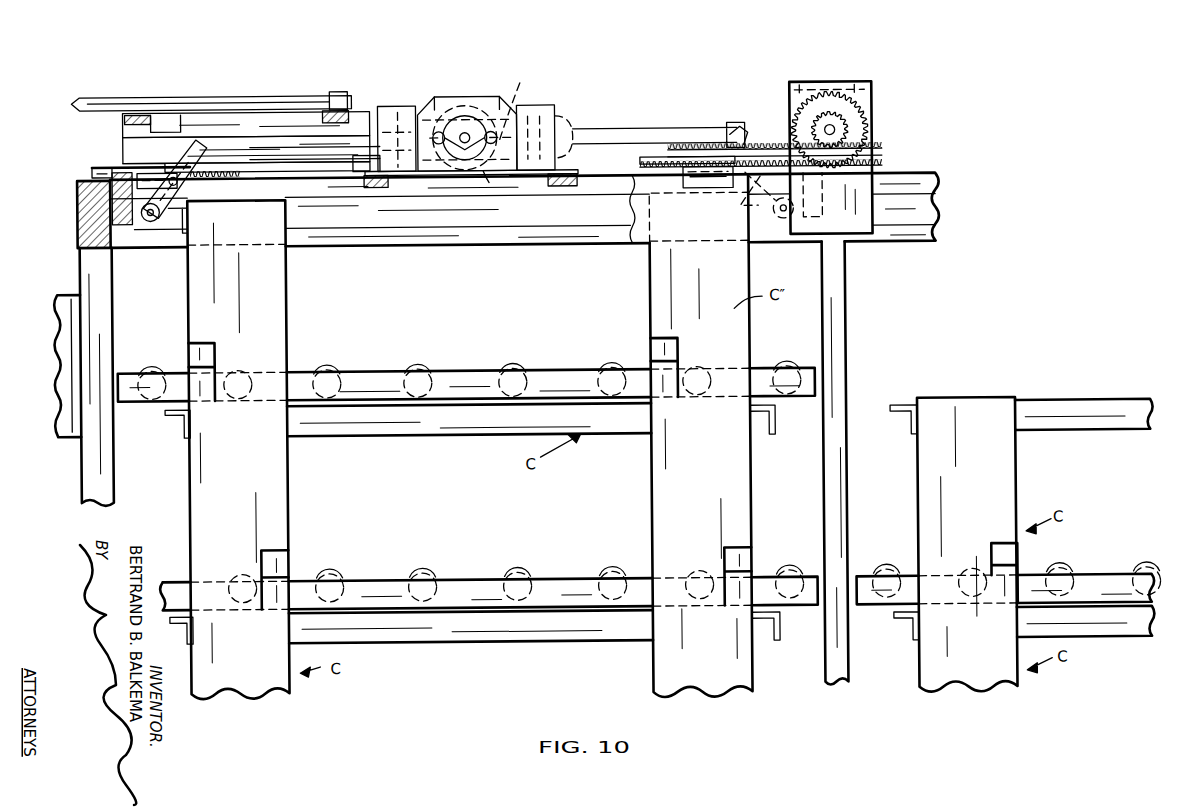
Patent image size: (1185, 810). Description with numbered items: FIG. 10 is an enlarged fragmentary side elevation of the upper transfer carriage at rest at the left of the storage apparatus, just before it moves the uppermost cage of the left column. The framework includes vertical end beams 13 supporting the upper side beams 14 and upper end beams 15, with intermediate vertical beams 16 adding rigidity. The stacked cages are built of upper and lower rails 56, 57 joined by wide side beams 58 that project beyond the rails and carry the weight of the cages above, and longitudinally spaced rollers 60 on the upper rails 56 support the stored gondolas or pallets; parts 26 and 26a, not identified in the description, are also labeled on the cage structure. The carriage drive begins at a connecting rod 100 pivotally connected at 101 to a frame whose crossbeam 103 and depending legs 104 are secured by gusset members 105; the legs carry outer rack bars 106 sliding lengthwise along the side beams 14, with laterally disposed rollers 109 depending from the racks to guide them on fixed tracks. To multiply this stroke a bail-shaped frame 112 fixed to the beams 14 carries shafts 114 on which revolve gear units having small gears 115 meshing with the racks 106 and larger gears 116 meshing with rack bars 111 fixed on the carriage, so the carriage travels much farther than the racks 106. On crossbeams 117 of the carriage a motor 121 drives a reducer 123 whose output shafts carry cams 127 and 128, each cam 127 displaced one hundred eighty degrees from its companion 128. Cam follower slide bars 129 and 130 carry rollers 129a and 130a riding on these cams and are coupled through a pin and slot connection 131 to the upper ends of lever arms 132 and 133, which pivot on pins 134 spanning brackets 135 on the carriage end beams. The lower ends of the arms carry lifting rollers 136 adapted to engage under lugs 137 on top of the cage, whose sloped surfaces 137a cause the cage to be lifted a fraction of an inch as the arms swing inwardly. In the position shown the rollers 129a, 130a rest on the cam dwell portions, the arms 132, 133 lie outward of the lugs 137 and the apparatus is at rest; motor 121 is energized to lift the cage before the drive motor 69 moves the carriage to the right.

The vertical beams 13 is at (104, 333).
The upper side beams 14 is at (909, 229).
The upper end beams 15 is at (62, 209).
The vertical beams 16 is at (850, 352).
The bracket clip 26 is at (199, 377).
The bracket clip 26a is at (288, 548).
The upper rails 56 is at (364, 384).
The lower rails 57 is at (555, 245).
The side beams 58 is at (274, 287).
The rollers 60 is at (422, 365).
The motor 69 is at (62, 337).
The connecting rod 100 is at (277, 94).
The pivotal connection 101 is at (352, 107).
The crossbeam 103 is at (392, 105).
The depending legs 104 is at (187, 117).
The gusset members 105 is at (327, 92).
The outer rack bars 106 is at (700, 168).
The laterally disposed rollers 109 is at (355, 172).
The rack bars 111 is at (670, 158).
The bail-shaped frame 112 is at (864, 197).
The shafts 114 is at (838, 132).
The gears 115 is at (850, 124).
The gears 116 is at (858, 74).
The crossbeams 117 is at (380, 186).
The motor 121 is at (575, 119).
The reducer 123 is at (472, 96).
The cam 127 is at (498, 183).
The cam 128 is at (434, 170).
The cam follower bar 129 is at (668, 170).
The roller 129a is at (493, 101).
The cam follower bar 130 is at (242, 132).
The roller 130a is at (452, 119).
The pin and slot connection 131 is at (207, 140).
The lever arm 132 is at (747, 149).
The lever arm 133 is at (132, 221).
The pins 134 is at (182, 181).
The brackets 135 is at (152, 187).
The lifting rollers 136 is at (784, 220).
The lugs 137 is at (178, 425).
The sloped surfaces 137a is at (154, 219).